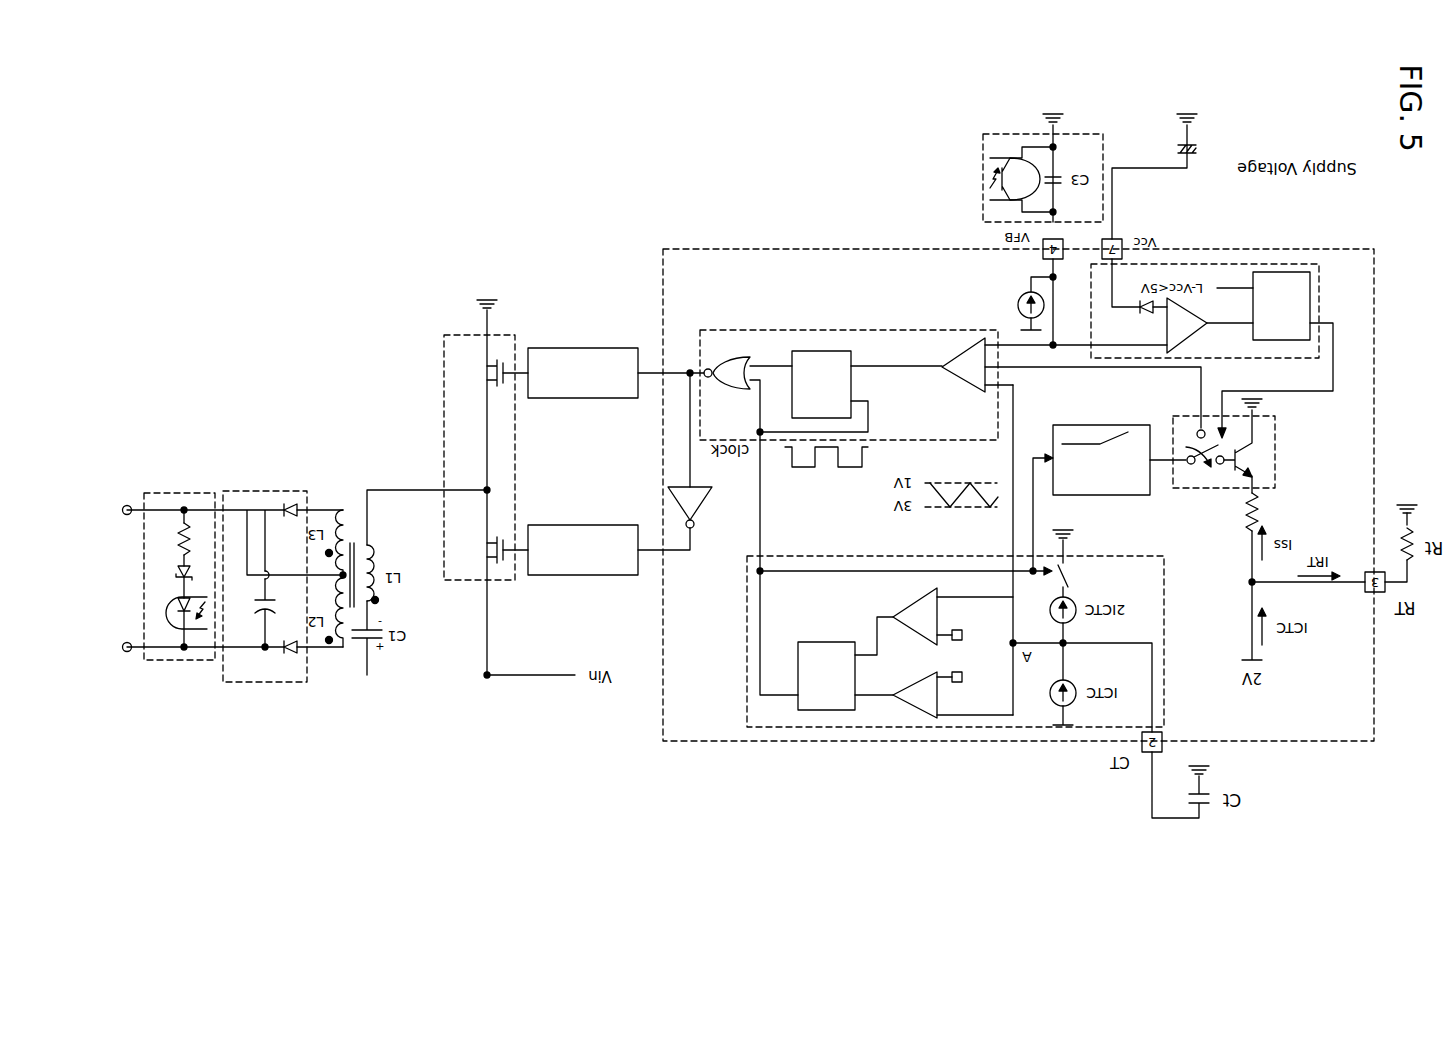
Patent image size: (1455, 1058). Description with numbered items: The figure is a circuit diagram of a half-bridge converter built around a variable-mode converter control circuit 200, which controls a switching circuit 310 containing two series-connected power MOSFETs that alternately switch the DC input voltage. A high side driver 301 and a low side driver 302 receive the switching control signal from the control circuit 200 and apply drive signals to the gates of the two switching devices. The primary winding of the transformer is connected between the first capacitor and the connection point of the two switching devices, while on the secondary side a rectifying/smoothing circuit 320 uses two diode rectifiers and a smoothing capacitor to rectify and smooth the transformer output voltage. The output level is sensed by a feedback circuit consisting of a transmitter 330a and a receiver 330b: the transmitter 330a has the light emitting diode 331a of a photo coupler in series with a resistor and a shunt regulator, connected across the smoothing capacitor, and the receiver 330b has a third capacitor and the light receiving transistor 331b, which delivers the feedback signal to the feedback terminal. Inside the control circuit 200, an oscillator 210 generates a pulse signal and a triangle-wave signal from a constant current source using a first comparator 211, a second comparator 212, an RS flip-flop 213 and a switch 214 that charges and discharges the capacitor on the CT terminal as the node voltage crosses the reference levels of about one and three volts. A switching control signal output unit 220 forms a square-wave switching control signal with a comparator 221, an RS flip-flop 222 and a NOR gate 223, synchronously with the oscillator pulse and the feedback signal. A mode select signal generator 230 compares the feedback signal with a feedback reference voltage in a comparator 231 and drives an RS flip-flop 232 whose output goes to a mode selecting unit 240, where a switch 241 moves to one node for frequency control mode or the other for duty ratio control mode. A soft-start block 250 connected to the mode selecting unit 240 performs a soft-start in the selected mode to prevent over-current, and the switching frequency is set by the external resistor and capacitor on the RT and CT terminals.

The converter control circuit 200 is at (745, 741).
The oscillator 210 is at (965, 727).
The first comparator 211 is at (902, 686).
The second comparator 212 is at (913, 598).
The RS flip-flop 213 is at (798, 668).
The switch 214 is at (1074, 574).
The switching control signal output unit 220 is at (700, 432).
The comparator 221 is at (957, 339).
The RS flip-flop 222 is at (816, 348).
The NOR gate 223 is at (733, 348).
The mode select signal generator 230 is at (1178, 264).
The comparator 231 is at (1210, 320).
The RS flip-flop 232 is at (1300, 272).
The mode selecting unit 240 is at (1278, 446).
The switch 241 is at (1218, 491).
The soft-start block 250 is at (1097, 412).
The high side driver 301 is at (578, 525).
The low side driver 302 is at (578, 348).
The switching circuit 310 is at (452, 581).
The rectifying/smoothing circuit 320 is at (240, 684).
The transmitter 330a is at (170, 660).
The receiver 330b is at (983, 212).
The light emitting diode 331a is at (162, 618).
The light receiving transistor 331b is at (1011, 155).